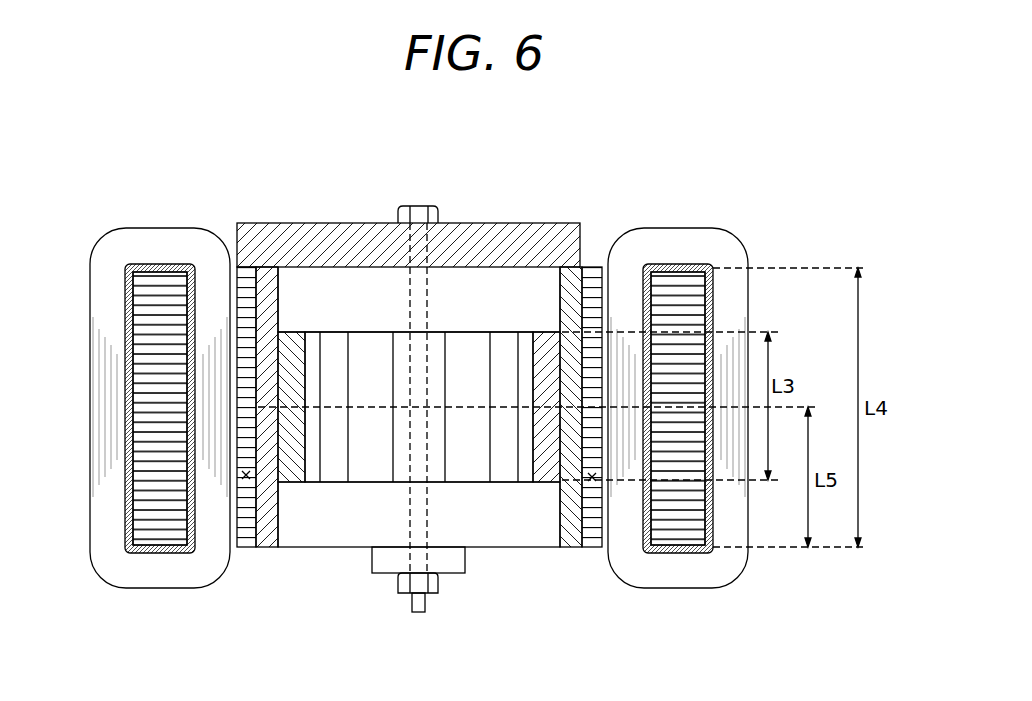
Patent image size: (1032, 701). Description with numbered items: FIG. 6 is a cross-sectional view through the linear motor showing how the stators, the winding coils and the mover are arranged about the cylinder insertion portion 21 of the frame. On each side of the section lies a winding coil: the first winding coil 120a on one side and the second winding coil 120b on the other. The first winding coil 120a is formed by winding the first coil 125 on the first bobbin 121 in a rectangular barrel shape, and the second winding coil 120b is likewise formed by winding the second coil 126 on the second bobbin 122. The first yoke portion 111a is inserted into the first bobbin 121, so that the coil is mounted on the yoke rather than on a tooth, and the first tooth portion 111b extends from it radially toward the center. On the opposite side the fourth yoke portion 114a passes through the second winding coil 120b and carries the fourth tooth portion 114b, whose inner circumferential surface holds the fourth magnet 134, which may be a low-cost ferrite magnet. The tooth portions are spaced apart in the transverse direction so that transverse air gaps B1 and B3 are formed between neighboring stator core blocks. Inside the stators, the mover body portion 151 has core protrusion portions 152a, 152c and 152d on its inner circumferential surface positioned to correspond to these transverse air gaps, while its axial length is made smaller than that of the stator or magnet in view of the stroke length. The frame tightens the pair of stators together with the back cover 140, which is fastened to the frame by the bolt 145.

The cylinder insertion portion 21 is at (323, 238).
The first yoke portion 111a is at (172, 292).
The first tooth portion 111b is at (248, 288).
The fourth yoke portion 114a is at (663, 290).
The fourth tooth portion 114b is at (592, 288).
The first winding coil 120a is at (157, 150).
The second winding coil 120b is at (682, 150).
The first bobbin 121 is at (133, 285).
The second bobbin 122 is at (697, 258).
The first coil 125 is at (103, 277).
The second coil 126 is at (733, 277).
The fourth magnet 134 is at (570, 307).
The back cover 140 is at (387, 568).
The bolt 145 is at (428, 250).
The mover body portion 151 is at (365, 437).
The core protrusion portion 152a is at (292, 467).
The core protrusion portion 152c is at (545, 467).
The core protrusion portion 152d is at (440, 440).
The transverse air gap B1 is at (247, 478).
The transverse air gap B3 is at (592, 480).